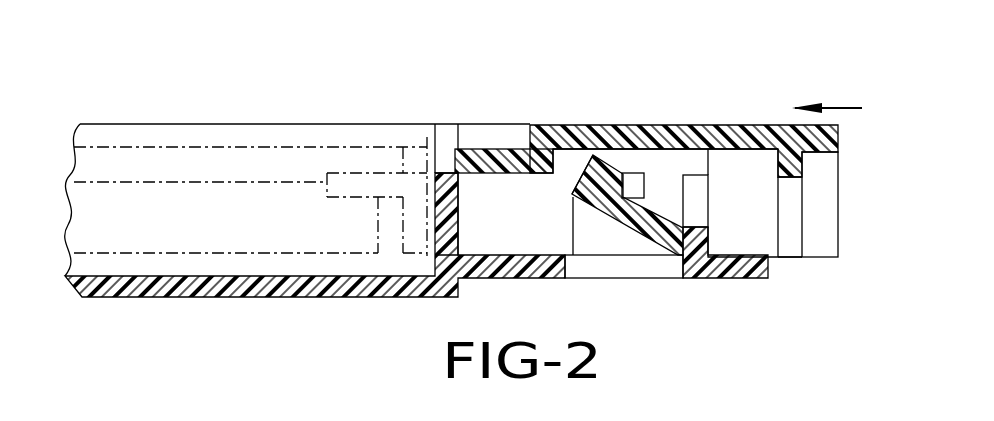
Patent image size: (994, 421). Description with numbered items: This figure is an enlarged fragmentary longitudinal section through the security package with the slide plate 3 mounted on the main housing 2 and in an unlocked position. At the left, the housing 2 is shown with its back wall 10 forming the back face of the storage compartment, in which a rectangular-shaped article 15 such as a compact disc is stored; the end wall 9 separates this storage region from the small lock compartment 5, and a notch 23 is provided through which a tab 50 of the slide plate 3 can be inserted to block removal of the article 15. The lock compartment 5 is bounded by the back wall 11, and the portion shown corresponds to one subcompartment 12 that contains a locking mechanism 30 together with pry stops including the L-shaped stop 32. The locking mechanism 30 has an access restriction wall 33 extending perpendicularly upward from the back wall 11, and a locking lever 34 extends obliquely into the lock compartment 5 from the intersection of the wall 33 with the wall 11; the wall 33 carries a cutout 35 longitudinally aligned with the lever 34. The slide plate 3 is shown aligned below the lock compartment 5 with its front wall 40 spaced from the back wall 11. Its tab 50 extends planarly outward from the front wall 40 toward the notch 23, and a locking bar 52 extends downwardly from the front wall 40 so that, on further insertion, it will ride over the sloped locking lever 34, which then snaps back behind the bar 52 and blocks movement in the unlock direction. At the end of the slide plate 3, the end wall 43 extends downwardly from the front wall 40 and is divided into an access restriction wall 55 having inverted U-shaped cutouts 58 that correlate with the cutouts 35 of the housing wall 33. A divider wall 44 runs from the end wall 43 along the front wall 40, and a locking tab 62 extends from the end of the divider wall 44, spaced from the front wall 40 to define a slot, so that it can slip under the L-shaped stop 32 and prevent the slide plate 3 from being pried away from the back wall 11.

The main housing 2 is at (110, 298).
The slide plate 3 is at (762, 127).
The lock compartment 5 is at (742, 50).
The end wall 9 is at (453, 209).
The back wall 10 is at (222, 296).
The back wall 11 is at (758, 282).
The subcompartment 12 is at (745, 218).
The rectangular-shaped article 15 is at (178, 165).
The notch 23 is at (447, 138).
The locking mechanism 30 is at (643, 238).
The L-shaped stop 32 is at (543, 223).
The access restriction wall 33 is at (708, 191).
The locking lever 34 is at (602, 150).
The cutout 35 is at (704, 217).
The front wall 40 is at (568, 125).
The end wall 43 is at (805, 235).
The divider wall 44 is at (728, 177).
The tab 50 is at (500, 150).
The locking bar 52 is at (655, 162).
The access restriction wall 55 is at (805, 168).
The cutout 58 is at (790, 245).
The locking tab 62 is at (592, 242).